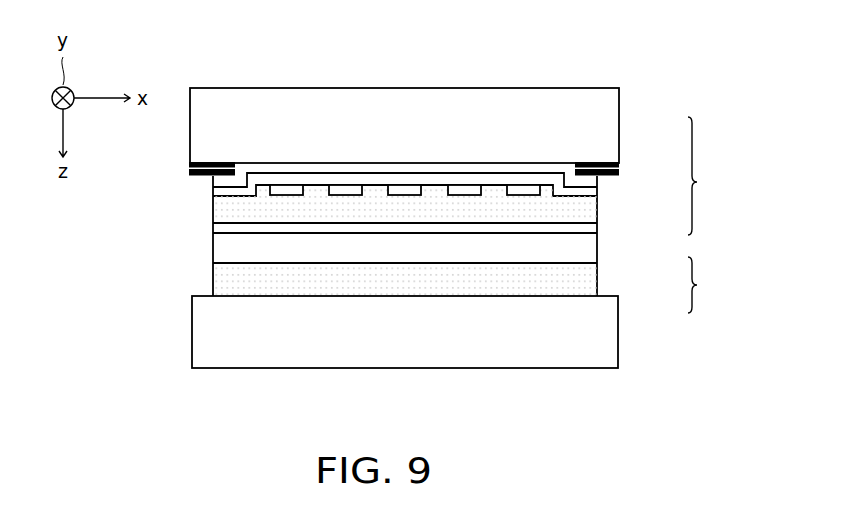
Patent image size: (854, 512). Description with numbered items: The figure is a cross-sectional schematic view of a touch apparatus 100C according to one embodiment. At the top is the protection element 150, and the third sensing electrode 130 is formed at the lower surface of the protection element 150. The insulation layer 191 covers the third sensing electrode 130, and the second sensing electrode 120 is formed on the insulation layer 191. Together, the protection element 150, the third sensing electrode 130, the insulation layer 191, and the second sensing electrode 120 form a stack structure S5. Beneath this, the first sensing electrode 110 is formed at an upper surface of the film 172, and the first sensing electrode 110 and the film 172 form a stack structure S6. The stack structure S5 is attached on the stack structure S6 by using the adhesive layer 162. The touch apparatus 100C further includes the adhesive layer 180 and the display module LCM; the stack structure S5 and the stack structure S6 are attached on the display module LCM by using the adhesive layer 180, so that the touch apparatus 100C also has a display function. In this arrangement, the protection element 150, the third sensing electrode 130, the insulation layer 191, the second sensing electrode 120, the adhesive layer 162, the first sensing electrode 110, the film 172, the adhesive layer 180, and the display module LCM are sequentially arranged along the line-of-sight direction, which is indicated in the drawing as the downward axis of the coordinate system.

The protection element 150 is at (607, 124).
The third sensing electrode 130 is at (592, 181).
The insulation layer 191 is at (590, 193).
The adhesive layer 162 is at (222, 212).
The second sensing electrode 120 is at (578, 214).
The first sensing electrode 110 is at (585, 228).
The film 172 is at (578, 250).
The adhesive layer 180 is at (222, 285).
The display module LCM is at (605, 333).
The stack structure S5 is at (708, 176).
The stack structure S6 is at (708, 285).
The touch apparatus 100C is at (740, 412).